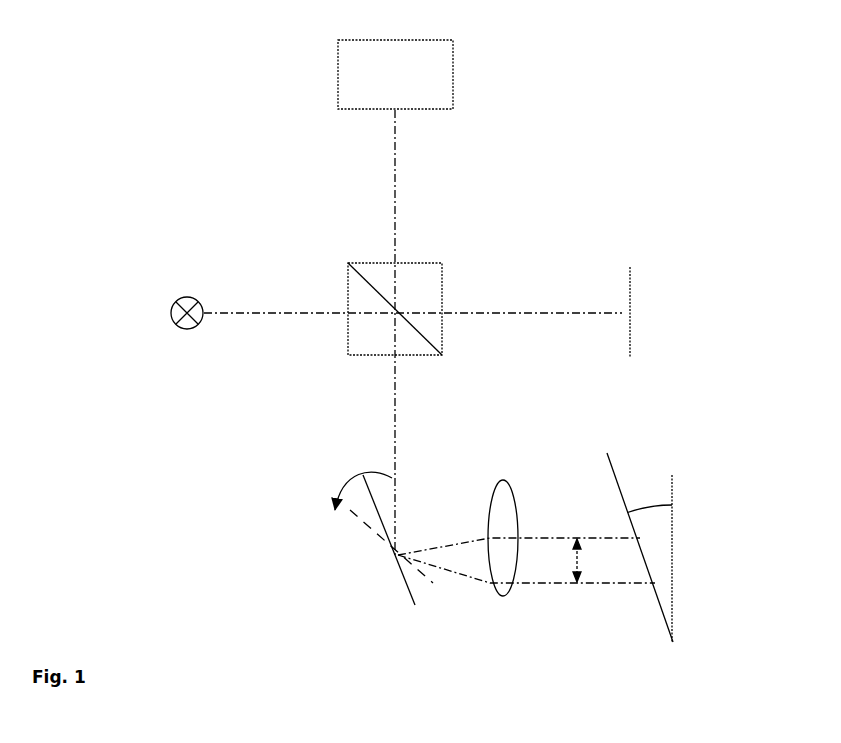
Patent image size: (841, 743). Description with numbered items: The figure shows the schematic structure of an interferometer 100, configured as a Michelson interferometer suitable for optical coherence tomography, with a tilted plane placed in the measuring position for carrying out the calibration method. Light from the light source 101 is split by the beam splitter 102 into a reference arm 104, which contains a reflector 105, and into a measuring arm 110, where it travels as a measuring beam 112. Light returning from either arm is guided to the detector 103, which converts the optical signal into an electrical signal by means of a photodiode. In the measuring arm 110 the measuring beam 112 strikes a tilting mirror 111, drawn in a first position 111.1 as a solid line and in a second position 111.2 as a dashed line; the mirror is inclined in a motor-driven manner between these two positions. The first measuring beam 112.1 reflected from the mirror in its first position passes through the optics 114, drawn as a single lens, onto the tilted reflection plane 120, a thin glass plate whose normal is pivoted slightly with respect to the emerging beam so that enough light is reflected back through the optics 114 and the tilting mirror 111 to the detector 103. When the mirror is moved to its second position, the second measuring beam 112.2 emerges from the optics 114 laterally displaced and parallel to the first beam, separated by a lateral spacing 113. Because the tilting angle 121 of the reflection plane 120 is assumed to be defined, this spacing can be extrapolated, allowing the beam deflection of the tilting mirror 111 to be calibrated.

The interferometer 100 is at (203, 104).
The light source 101 is at (182, 299).
The beam splitter 102 is at (360, 268).
The detector 103 is at (338, 55).
The reference arm 104 is at (542, 280).
The reflector 105 is at (630, 266).
The measuring arm 110 is at (368, 428).
The tilting mirror 111 is at (320, 488).
The first position 111.1 is at (392, 530).
The second position 111.2 is at (450, 598).
The measuring beam 112 is at (396, 392).
The first measuring beam 112.1 is at (598, 535).
The second measuring beam 112.2 is at (532, 584).
The lateral spacing 113 is at (581, 566).
The optics 114 is at (500, 489).
The reflection plane 120 is at (634, 538).
The tilting angle 121 is at (650, 493).